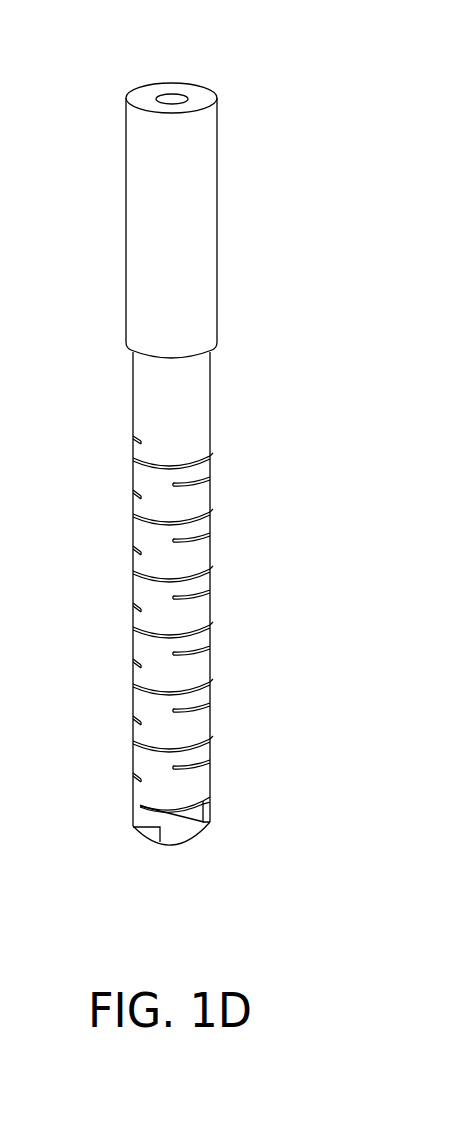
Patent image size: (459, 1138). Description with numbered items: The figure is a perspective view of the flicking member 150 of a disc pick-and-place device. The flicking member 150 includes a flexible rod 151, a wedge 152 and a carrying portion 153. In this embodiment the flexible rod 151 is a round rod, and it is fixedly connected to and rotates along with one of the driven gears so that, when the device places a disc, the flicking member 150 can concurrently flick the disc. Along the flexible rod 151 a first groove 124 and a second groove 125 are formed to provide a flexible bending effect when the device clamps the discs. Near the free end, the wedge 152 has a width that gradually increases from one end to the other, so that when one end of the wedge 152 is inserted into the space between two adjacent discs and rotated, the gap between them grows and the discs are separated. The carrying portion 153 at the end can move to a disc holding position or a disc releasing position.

The flicking member 150 is at (97, 60).
The flexible rod 151 is at (210, 409).
The first groove 124 is at (134, 577).
The second groove 125 is at (185, 598).
The wedge 152 is at (212, 809).
The carrying portion 153 is at (148, 836).